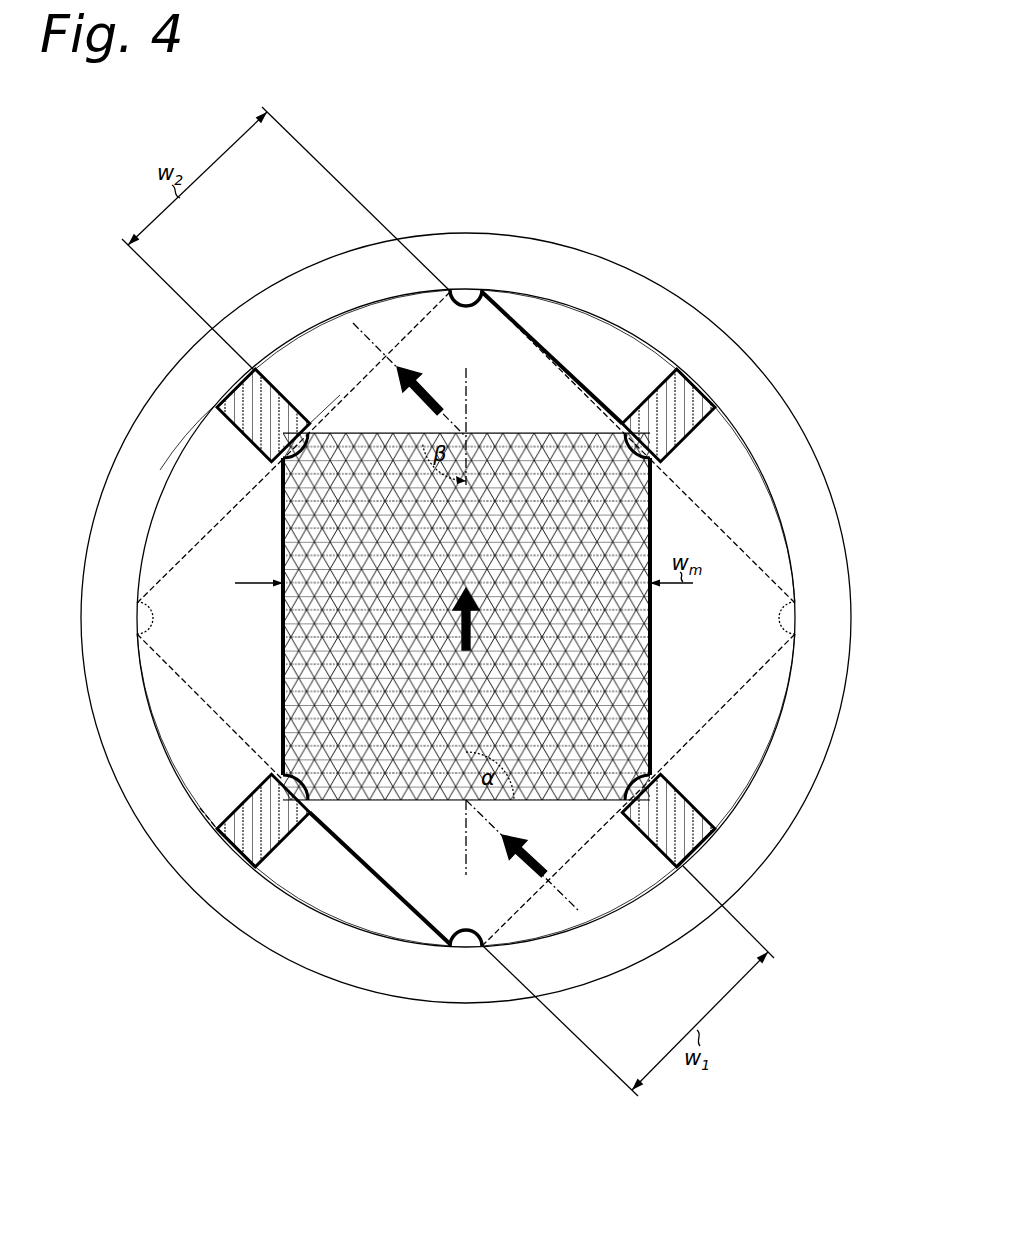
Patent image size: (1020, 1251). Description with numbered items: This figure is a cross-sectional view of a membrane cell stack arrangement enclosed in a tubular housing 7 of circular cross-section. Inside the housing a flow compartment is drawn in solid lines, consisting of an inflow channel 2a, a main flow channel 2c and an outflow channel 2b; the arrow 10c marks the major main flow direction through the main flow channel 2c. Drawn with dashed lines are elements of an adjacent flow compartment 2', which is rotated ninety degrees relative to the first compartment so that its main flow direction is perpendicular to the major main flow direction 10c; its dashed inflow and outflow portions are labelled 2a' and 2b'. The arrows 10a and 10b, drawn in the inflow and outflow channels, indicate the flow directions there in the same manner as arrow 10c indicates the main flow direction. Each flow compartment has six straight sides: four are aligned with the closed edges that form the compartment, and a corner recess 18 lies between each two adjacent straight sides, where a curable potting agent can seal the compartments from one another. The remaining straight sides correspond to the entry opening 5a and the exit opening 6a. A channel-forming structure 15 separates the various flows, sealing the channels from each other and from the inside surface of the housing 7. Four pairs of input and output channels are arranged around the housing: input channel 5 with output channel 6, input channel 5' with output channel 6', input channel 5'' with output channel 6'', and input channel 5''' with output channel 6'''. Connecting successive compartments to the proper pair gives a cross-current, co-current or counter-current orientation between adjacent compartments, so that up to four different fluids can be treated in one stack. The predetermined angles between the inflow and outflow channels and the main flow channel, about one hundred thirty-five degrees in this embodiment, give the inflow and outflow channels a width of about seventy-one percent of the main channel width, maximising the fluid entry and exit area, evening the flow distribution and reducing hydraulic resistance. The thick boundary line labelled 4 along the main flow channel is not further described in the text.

The adjacent flow compartment 2' is at (503, 618).
The inflow channel 2a is at (579, 958).
The tube wall section 2a' is at (424, 619).
The outflow channel 2b is at (352, 301).
The tube wall section 2b' is at (810, 545).
The main flow channel 2c is at (400, 800).
The core wall 4 is at (280, 703).
The input channel 5 is at (668, 892).
The input channel 5' is at (204, 409).
The input channel 5'' is at (259, 876).
The input channel 5''' is at (737, 422).
The entry opening 5a is at (682, 867).
The output channel 6 is at (225, 350).
The output channel 6' is at (798, 731).
The output channel 6'' is at (579, 280).
The output channel 6''' is at (132, 731).
The exit opening 6a is at (363, 417).
The tubular housing 7 is at (658, 302).
The force direction arrow 10a is at (548, 878).
The force direction arrow 10b is at (430, 407).
The major main flow direction 10c is at (463, 650).
The channel-forming structure 15 is at (688, 405).
The corner recess 18 is at (253, 865).